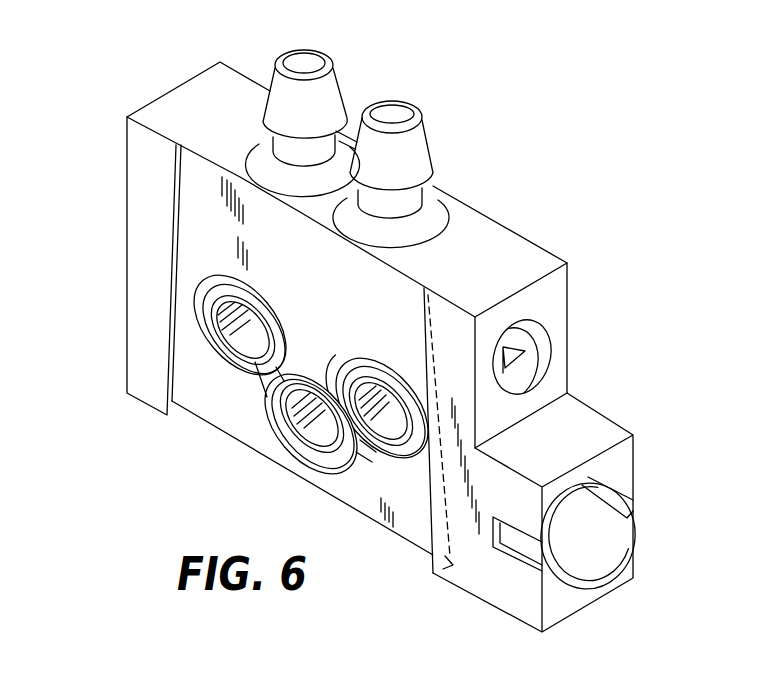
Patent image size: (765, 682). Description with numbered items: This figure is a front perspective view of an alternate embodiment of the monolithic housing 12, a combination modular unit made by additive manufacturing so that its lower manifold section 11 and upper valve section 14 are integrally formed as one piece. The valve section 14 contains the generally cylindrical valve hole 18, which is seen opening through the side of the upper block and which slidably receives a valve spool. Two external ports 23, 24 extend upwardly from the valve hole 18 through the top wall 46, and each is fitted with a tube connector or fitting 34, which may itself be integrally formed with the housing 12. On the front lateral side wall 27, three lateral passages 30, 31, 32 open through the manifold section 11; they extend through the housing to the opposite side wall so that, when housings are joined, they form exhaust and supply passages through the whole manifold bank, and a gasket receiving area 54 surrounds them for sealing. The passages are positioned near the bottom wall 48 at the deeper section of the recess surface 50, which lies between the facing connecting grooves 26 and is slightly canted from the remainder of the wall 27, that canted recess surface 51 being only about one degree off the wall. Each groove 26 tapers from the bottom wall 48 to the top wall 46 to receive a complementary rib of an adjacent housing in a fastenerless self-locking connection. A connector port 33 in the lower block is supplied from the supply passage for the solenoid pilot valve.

The manifold section 11 is at (360, 498).
The housing 12 is at (367, 321).
The valve section 14 is at (545, 248).
The valve hole 18 is at (542, 336).
The external port 23 is at (394, 114).
The external port 24 is at (308, 62).
The groove 26 is at (174, 390).
The lateral side wall 27 is at (125, 221).
The lateral passage 30 is at (246, 348).
The lateral passage 31 is at (305, 427).
The lateral passage 32 is at (381, 440).
The connector port 33 is at (606, 535).
The fitting 34 is at (369, 103).
The top wall 46 is at (490, 238).
The bottom wall 48 is at (328, 494).
The recess surface 50 is at (395, 330).
The recess surface 51 is at (214, 186).
The gasket receiving area 54 is at (290, 378).